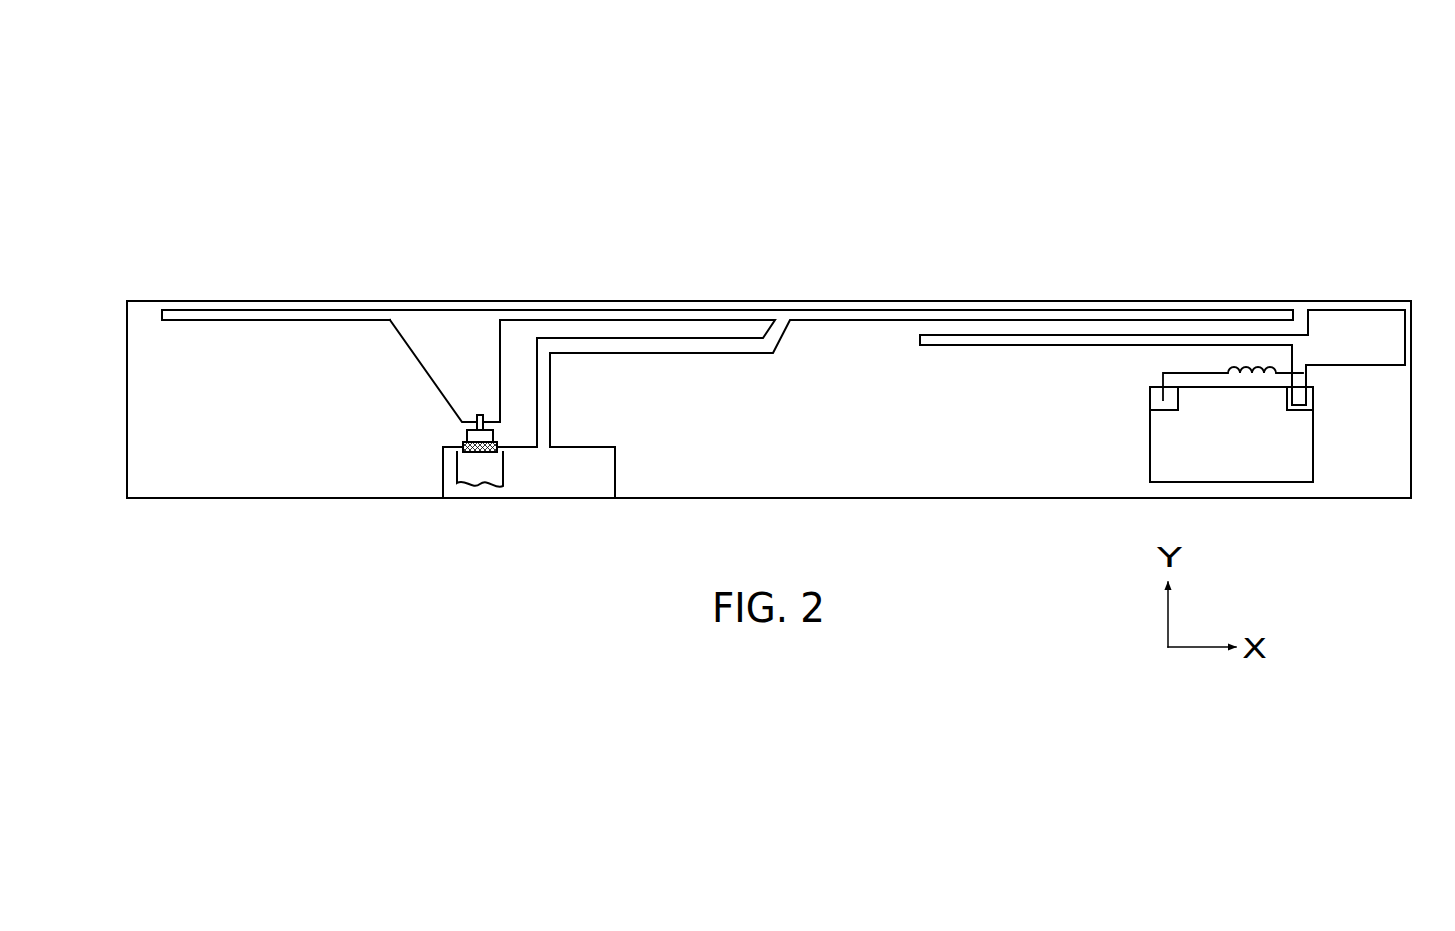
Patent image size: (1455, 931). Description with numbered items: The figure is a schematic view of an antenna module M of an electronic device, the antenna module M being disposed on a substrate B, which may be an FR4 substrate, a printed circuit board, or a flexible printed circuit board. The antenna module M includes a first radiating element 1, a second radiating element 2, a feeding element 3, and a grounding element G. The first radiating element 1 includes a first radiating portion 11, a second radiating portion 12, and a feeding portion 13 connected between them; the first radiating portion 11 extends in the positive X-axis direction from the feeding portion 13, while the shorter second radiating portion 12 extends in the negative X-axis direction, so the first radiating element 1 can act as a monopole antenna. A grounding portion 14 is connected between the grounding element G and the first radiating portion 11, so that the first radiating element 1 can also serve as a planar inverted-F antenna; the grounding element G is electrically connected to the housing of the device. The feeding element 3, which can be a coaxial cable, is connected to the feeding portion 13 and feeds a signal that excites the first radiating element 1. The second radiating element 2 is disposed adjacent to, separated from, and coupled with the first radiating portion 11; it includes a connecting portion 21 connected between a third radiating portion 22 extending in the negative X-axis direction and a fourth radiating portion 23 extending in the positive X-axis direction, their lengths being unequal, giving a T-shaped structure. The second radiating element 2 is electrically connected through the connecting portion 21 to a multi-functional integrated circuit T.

The first radiating element 1 is at (1010, 41).
The first radiating portion 11 is at (885, 312).
The second radiating portion 12 is at (260, 312).
The feeding portion 13 is at (438, 363).
The grounding portion 14 is at (713, 347).
The second radiating element 2 is at (1105, 41).
The connecting portion 21 is at (1302, 380).
The third radiating portion 22 is at (980, 338).
The fourth radiating portion 23 is at (1378, 335).
The feeding element 3 is at (446, 449).
The substrate B is at (148, 435).
The grounding element G is at (605, 475).
The integrated circuit T is at (1322, 441).
The antenna module M is at (526, 173).